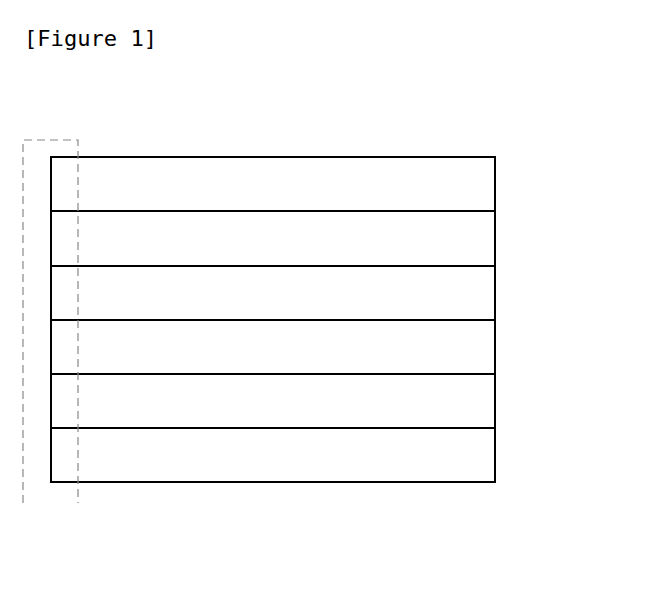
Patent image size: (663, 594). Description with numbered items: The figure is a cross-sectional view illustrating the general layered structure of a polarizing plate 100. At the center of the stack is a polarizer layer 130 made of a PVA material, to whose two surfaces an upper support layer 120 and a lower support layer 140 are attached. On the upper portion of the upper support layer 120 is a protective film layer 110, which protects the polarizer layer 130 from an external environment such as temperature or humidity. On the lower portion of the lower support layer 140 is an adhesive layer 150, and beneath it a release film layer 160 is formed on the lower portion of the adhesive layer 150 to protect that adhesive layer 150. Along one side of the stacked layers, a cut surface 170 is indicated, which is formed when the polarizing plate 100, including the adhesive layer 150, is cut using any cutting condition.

The polarizing plate 100 is at (97, 104).
The protective film layer 110 is at (485, 185).
The upper support layer 120 is at (485, 239).
The polarizer layer 130 is at (485, 294).
The lower support layer 140 is at (485, 349).
The adhesive layer 150 is at (485, 404).
The release film layer 160 is at (485, 458).
The cut surface 170 is at (50, 506).